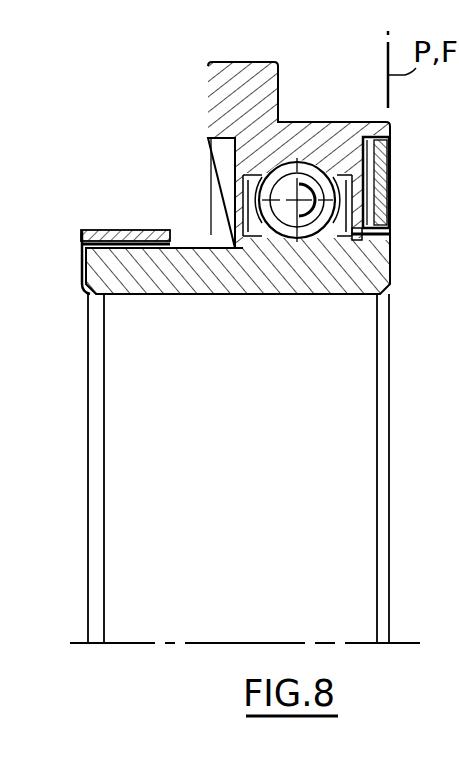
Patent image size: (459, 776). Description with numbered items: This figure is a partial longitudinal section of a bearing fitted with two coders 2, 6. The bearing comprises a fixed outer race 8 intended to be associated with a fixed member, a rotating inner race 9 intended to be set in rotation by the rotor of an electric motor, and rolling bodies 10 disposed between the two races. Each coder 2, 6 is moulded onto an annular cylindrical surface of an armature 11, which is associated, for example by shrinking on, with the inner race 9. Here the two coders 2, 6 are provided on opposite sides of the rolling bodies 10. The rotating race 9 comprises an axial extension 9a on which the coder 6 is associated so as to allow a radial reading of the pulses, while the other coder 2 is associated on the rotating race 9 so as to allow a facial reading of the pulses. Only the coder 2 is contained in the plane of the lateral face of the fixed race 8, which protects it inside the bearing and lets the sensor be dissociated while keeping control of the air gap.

The coder 2 is at (386, 165).
The coder 6 is at (123, 258).
The fixed outer race 8 is at (278, 74).
The rotating inner race 9 is at (388, 268).
The axial extension 9a is at (177, 285).
The rolling bodies 10 is at (288, 215).
The armature 11 is at (380, 236).